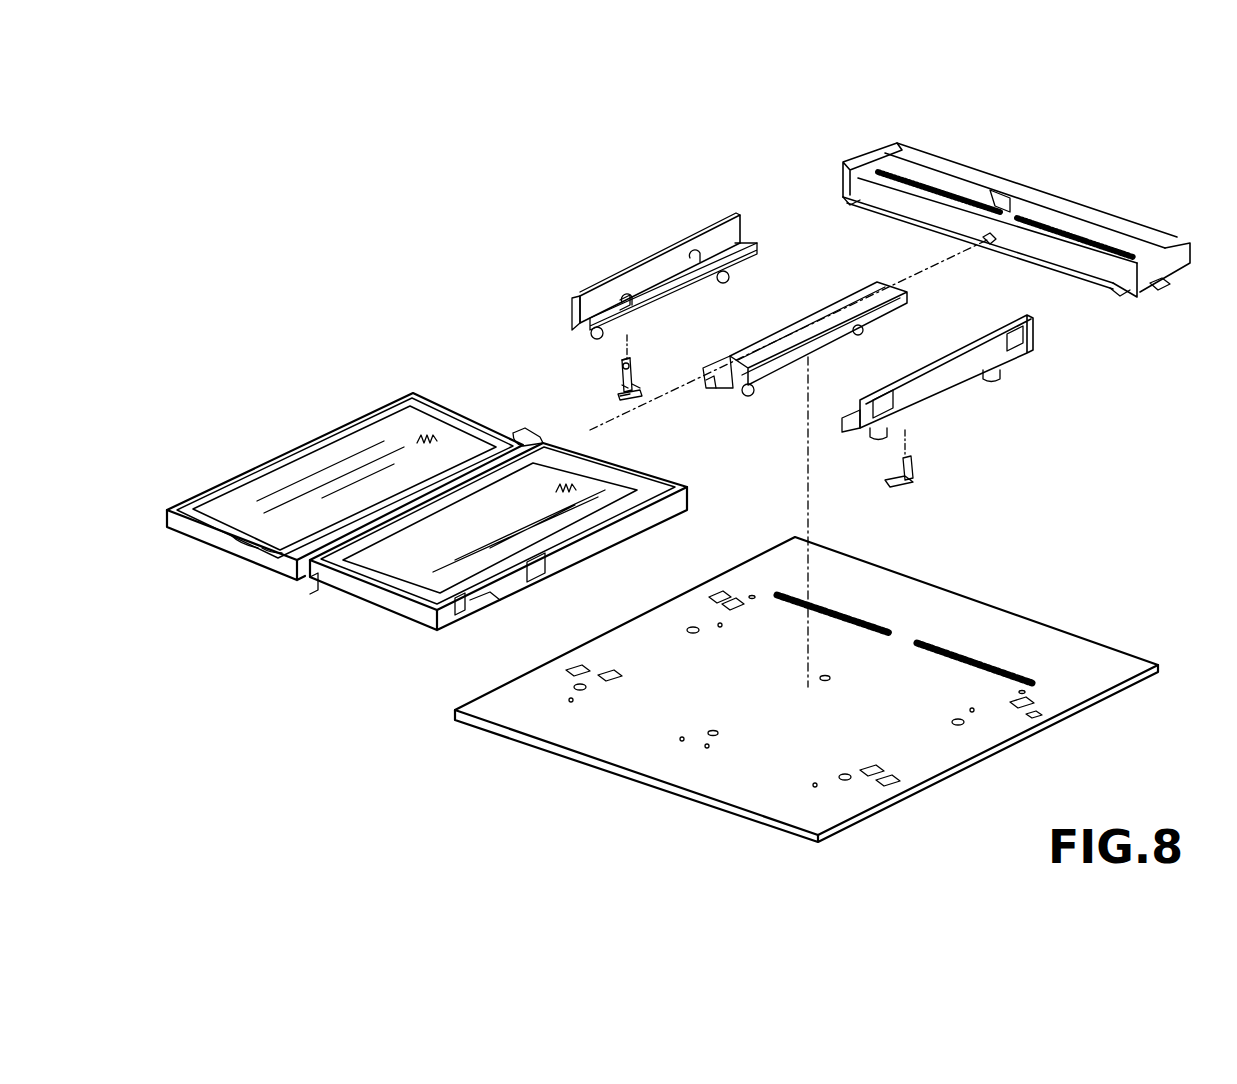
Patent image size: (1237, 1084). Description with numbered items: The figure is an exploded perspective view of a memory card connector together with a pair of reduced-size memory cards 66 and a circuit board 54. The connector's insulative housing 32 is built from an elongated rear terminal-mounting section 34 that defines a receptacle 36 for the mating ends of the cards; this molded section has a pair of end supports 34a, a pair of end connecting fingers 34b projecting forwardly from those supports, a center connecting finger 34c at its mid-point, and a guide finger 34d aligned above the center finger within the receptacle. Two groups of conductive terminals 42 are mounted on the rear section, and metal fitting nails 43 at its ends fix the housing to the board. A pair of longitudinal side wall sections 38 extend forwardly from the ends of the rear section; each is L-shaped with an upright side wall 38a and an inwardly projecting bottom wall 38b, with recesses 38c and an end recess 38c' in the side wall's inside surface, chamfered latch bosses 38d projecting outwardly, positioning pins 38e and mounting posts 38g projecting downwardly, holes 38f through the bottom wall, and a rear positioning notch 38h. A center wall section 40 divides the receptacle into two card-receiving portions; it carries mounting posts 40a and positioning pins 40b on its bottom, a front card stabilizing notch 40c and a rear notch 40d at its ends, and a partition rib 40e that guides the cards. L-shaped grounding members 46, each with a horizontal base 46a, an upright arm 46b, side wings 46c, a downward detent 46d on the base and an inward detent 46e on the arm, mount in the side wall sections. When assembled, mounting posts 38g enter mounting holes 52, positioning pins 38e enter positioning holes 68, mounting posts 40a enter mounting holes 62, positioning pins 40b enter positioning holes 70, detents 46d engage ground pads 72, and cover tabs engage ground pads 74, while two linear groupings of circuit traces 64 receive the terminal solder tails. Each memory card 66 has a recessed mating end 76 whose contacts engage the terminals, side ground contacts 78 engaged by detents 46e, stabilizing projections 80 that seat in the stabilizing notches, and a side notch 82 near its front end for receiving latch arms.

The insulative housing 32 is at (1001, 230).
The rear terminal-mounting section 34 is at (990, 185).
The end supports 34a is at (855, 165).
The end connecting fingers 34b is at (843, 195).
The center connecting finger 34c is at (990, 240).
The housing divider 34d is at (1010, 213).
The receptacle 36 is at (1065, 250).
The conductive terminals 42 is at (920, 175).
The fitting nails 43 is at (1165, 281).
The side wall sections 38 is at (807, 319).
The upright side wall 38a is at (722, 240).
The bottom wall 38b is at (660, 290).
The cut-outs or recesses 38c is at (604, 266).
The bracket end slot 38c' is at (544, 307).
The chamfered latch bosses 38d is at (1025, 345).
The positioning pins 38e is at (770, 260).
The holes 38f is at (640, 300).
The mounting posts 38g is at (730, 283).
The rear positioning notch 38h is at (745, 230).
The center wall section 40 is at (810, 329).
The mounting posts 40a is at (752, 393).
The positioning pins 40b is at (715, 383).
The front card stabilizing notch 40c is at (720, 365).
The rear notch 40d is at (880, 290).
The partition rib 40e is at (812, 318).
The grounding members 46 is at (748, 463).
The base 46a is at (640, 395).
The upright arm 46b is at (635, 378).
The side wings 46c is at (620, 388).
The downwardly projecting detent 46d is at (620, 398).
The inwardly projecting detent 46e is at (621, 365).
The mounting holes 52 is at (692, 627).
The circuit board 54 is at (605, 765).
The mounting holes 62 is at (825, 681).
The circuit traces 64 is at (950, 650).
The reduced-size memory cards 66 is at (242, 548).
The positioning holes 68 is at (719, 623).
The positioning holes 70 is at (706, 748).
The ground pads 72 is at (615, 676).
The ground pads 74 is at (718, 594).
The recessed mating end 76 is at (480, 405).
The ground contacts 78 is at (543, 572).
The stabilizing projections 80 is at (495, 605).
The notch 82 is at (460, 600).